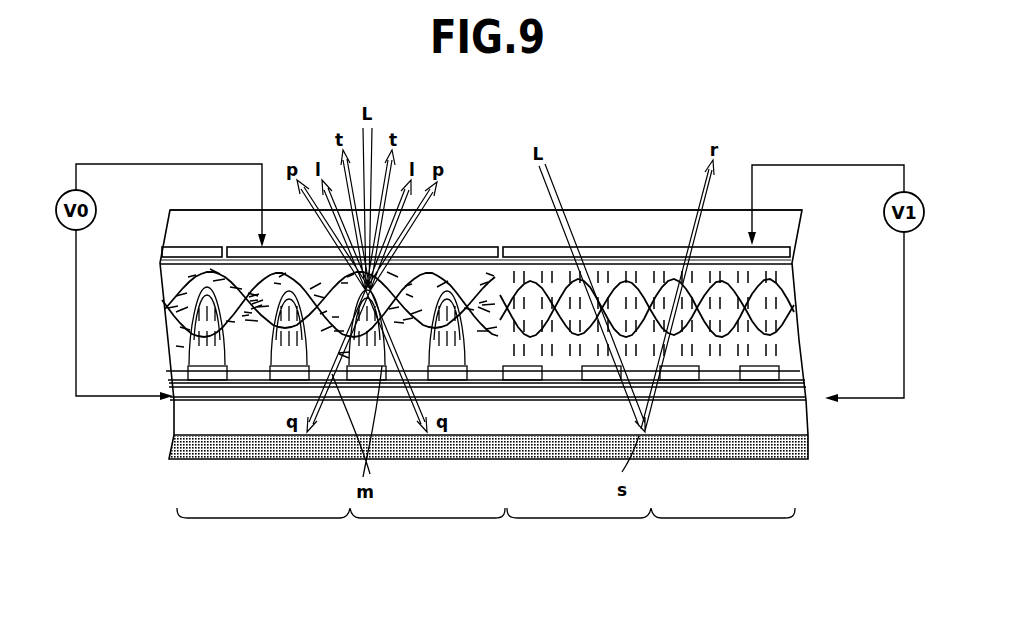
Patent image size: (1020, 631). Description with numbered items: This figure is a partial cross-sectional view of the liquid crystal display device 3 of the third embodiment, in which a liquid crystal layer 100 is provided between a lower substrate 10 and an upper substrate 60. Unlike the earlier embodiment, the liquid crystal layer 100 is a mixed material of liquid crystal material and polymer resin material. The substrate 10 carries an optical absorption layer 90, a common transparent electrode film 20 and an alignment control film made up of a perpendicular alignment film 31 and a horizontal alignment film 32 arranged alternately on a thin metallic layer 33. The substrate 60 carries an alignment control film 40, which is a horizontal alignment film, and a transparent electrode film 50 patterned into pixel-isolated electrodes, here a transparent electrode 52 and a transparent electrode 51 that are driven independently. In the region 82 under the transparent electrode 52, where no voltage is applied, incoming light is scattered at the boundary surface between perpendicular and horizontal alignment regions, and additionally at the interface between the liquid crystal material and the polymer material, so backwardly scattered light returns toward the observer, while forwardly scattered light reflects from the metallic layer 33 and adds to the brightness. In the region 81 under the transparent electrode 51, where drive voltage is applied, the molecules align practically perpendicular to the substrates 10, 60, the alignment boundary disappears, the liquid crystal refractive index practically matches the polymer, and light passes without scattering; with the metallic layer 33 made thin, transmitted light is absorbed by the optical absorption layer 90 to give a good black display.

The liquid crystal display device 3 is at (528, 406).
The substrate 10 is at (790, 423).
The transparent electrode film 20 is at (798, 400).
The perpendicular alignment film 31 is at (522, 380).
The horizontal alignment film 32 is at (560, 377).
The metallic layer 33 is at (788, 383).
The alignment control film 40 is at (765, 263).
The transparent electrode film 50 is at (785, 252).
The transparent electrode 51 is at (622, 248).
The transparent electrode 52 is at (468, 248).
The substrate 60 is at (775, 228).
The pixel (region where voltage is applied) 81 is at (651, 533).
The pixel (region where low voltage is applied) 82 is at (341, 533).
The optical absorption layer 90 is at (795, 450).
The liquid crystal layer 100 is at (156, 265).